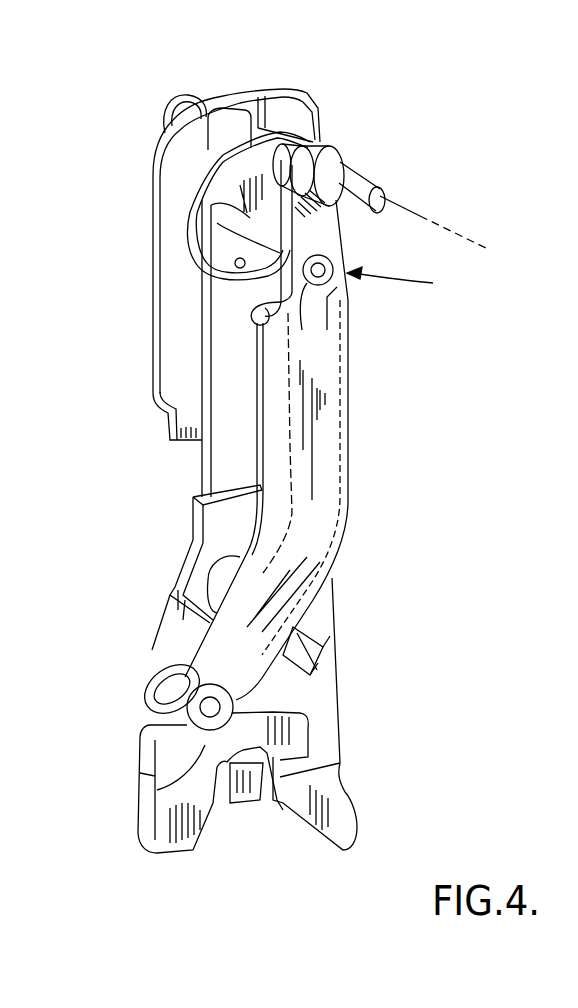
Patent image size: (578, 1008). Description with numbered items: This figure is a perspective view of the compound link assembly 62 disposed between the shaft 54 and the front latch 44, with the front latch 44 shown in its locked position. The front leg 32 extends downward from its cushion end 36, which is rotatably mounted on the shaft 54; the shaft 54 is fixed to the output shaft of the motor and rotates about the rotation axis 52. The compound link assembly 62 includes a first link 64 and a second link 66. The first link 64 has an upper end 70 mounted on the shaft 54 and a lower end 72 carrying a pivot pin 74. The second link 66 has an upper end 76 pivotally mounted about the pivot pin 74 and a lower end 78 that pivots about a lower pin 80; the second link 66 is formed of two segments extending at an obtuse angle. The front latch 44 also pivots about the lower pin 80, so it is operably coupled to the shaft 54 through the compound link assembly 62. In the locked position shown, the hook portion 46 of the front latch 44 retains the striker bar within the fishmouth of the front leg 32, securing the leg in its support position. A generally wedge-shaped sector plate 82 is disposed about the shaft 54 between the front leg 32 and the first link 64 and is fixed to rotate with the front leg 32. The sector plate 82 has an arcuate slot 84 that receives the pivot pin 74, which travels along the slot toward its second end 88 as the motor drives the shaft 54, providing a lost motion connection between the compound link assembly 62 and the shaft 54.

The front leg 32 is at (152, 358).
The cushion end 36 is at (245, 91).
The front latch 44 is at (146, 678).
The hook portion 46 is at (233, 803).
The rotation axis 52 is at (447, 230).
The shaft 54 is at (368, 176).
The compound link assembly 62 is at (411, 290).
The first link 64 is at (340, 222).
The second link 66 is at (323, 460).
The upper end 70 is at (335, 145).
The lower end 72 is at (328, 286).
The pivot pin 74 is at (308, 302).
The upper end 76 is at (290, 300).
The lower end 78 is at (157, 783).
The lower pin 80 is at (236, 699).
The sector plate 82 is at (215, 168).
The arcuate slot 84 is at (215, 278).
The second end 88 is at (195, 235).